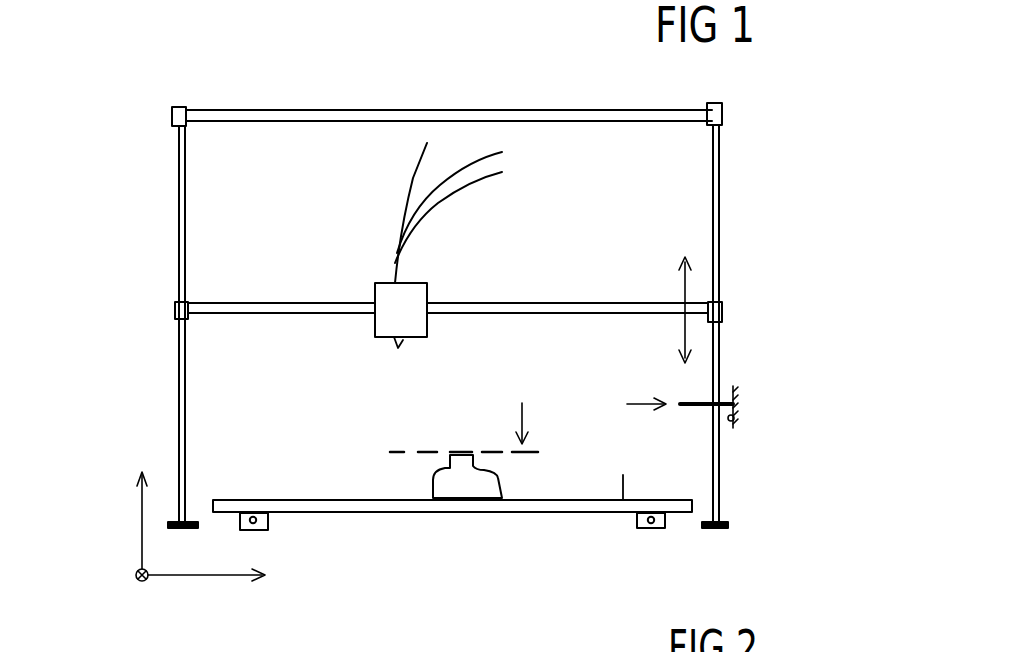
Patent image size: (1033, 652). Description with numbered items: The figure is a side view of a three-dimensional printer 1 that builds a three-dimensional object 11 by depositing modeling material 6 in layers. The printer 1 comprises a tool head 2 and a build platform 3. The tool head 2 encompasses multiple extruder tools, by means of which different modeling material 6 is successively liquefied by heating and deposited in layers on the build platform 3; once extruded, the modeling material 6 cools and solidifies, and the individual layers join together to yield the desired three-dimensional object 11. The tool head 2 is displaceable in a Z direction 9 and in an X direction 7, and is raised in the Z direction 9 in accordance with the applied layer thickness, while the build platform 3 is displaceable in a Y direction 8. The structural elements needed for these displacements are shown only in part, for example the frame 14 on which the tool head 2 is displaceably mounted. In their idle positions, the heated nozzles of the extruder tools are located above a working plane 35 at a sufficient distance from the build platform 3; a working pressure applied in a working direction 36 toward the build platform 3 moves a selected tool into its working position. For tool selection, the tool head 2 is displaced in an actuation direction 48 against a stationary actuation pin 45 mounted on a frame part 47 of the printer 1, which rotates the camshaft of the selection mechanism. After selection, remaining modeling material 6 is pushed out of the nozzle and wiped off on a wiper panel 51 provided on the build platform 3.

The 3D printer 1 is at (297, 100).
The tool head 2 is at (426, 290).
The build platform 3 is at (320, 500).
The modeling material 6 is at (412, 172).
The X direction 7 is at (208, 576).
The Y direction 8 is at (145, 583).
The Z direction 9 is at (141, 512).
The three-dimensional object 11 is at (487, 474).
The frame 14 is at (720, 203).
The working plane 35 is at (400, 456).
The working direction 36 is at (519, 415).
The actuation pin 45 is at (697, 408).
The frame part 47 is at (740, 417).
The actuation direction 48 is at (635, 406).
The wiper panel 51 is at (627, 483).